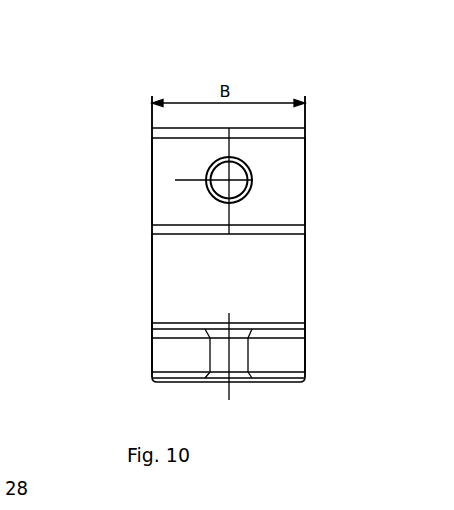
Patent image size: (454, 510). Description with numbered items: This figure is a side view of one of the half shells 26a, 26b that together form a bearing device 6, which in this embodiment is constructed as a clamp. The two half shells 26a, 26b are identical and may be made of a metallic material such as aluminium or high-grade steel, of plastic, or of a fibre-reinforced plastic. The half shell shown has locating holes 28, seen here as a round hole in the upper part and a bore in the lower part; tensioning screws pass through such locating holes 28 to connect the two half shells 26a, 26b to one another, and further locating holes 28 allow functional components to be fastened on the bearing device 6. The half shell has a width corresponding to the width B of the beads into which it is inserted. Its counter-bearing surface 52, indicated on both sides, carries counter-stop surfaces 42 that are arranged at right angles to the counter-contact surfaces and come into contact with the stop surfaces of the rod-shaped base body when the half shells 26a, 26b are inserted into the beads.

The bearing device 6 is at (349, 94).
The locating holes 28 is at (236, 184).
The counter-stop surfaces 42 is at (152, 246).
The counter-bearing surface 52 is at (118, 271).
The half shell 26a is at (152, 311).
The half shell 26b is at (181, 347).